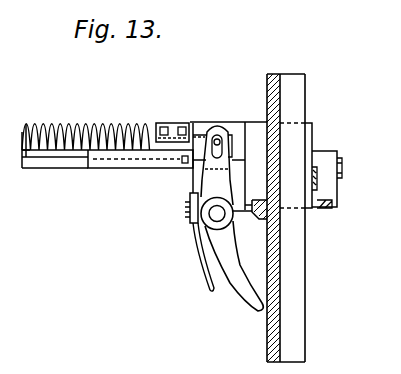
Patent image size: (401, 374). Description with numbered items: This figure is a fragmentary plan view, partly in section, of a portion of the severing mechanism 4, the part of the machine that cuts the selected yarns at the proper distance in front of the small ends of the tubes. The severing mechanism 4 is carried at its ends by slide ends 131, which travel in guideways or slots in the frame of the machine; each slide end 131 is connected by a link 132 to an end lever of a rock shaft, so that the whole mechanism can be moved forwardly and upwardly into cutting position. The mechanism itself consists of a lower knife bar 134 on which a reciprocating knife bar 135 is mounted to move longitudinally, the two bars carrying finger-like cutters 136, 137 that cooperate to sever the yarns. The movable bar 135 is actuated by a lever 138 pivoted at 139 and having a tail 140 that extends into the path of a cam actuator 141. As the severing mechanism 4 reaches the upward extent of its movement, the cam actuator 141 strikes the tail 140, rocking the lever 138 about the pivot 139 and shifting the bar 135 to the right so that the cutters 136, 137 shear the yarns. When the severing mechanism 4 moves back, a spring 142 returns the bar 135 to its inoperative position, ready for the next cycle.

The severing mechanism 4 is at (247, 218).
The slide end 131 is at (306, 208).
The link 132 is at (324, 195).
The lower knife bar 134 is at (35, 154).
The reciprocating knife bar 135 is at (72, 152).
The finger-like cutter 136 is at (52, 136).
The finger-like cutter 137 is at (55, 140).
The lever 138 is at (212, 182).
The pivot 139 is at (213, 214).
The tail 140 is at (251, 308).
The cam actuator 141 is at (257, 218).
The spring 142 is at (198, 258).